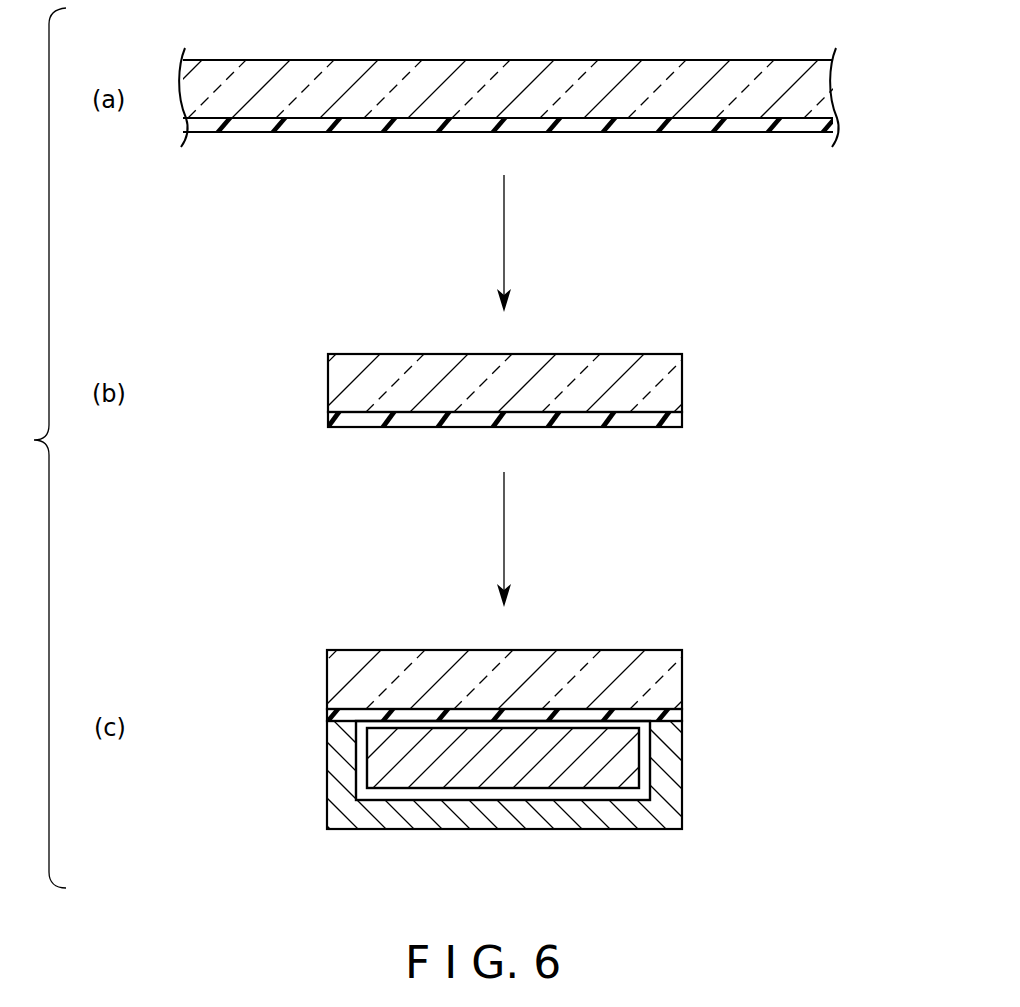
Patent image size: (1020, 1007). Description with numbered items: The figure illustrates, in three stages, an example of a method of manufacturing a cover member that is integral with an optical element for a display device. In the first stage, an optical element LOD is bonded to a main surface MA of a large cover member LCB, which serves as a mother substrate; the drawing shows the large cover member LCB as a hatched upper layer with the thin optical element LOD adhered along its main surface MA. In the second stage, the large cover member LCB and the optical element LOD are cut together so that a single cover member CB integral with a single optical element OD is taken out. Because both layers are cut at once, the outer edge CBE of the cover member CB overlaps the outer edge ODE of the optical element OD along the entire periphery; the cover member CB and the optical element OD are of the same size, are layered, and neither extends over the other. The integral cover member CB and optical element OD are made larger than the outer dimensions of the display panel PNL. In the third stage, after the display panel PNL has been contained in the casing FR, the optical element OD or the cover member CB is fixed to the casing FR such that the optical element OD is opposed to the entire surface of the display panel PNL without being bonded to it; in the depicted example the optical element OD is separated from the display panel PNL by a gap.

The large cover member LCB is at (765, 77).
The optical element LOD is at (802, 125).
The main surface MA is at (637, 134).
The cover member CB is at (667, 373).
The optical element OD is at (672, 418).
The outer edge of the cover member CBE is at (320, 390).
The outer edge of the optical element ODE is at (320, 418).
The display panel PNL is at (637, 762).
The casing FR is at (682, 830).